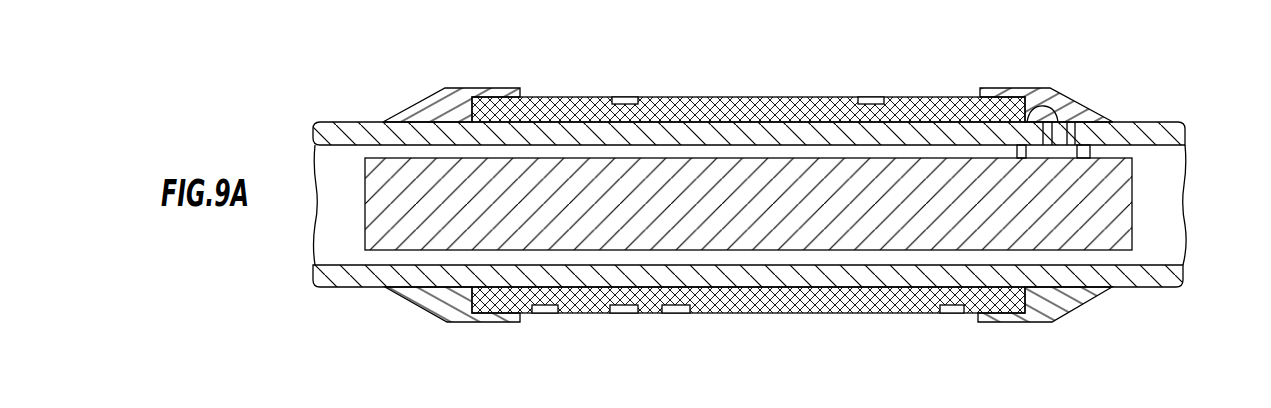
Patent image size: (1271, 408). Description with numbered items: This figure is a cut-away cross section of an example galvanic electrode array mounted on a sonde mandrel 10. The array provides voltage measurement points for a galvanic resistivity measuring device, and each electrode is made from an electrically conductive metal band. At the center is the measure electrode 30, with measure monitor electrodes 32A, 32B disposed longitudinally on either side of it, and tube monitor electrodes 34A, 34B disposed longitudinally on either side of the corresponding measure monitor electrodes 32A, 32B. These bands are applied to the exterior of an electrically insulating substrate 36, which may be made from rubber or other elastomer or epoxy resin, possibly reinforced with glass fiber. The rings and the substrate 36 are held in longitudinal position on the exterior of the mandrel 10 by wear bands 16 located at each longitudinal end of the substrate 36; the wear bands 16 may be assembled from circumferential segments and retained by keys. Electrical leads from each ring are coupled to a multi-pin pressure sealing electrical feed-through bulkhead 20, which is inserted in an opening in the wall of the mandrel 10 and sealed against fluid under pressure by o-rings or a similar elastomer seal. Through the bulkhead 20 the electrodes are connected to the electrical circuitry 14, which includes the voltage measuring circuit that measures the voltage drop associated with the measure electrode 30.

The mandrel 10 is at (337, 290).
The electrical circuitry 14 is at (1132, 193).
The wear bands 16 is at (415, 305).
The electrical feed-through bulkhead 20 is at (1060, 108).
The measure electrode 30 is at (686, 94).
The measure monitor electrode 32A is at (872, 95).
The measure monitor electrode 32B is at (625, 95).
The tube monitor electrode 34A is at (952, 313).
The tube monitor electrode 34B is at (545, 313).
The electrically insulating substrate 36 is at (848, 313).